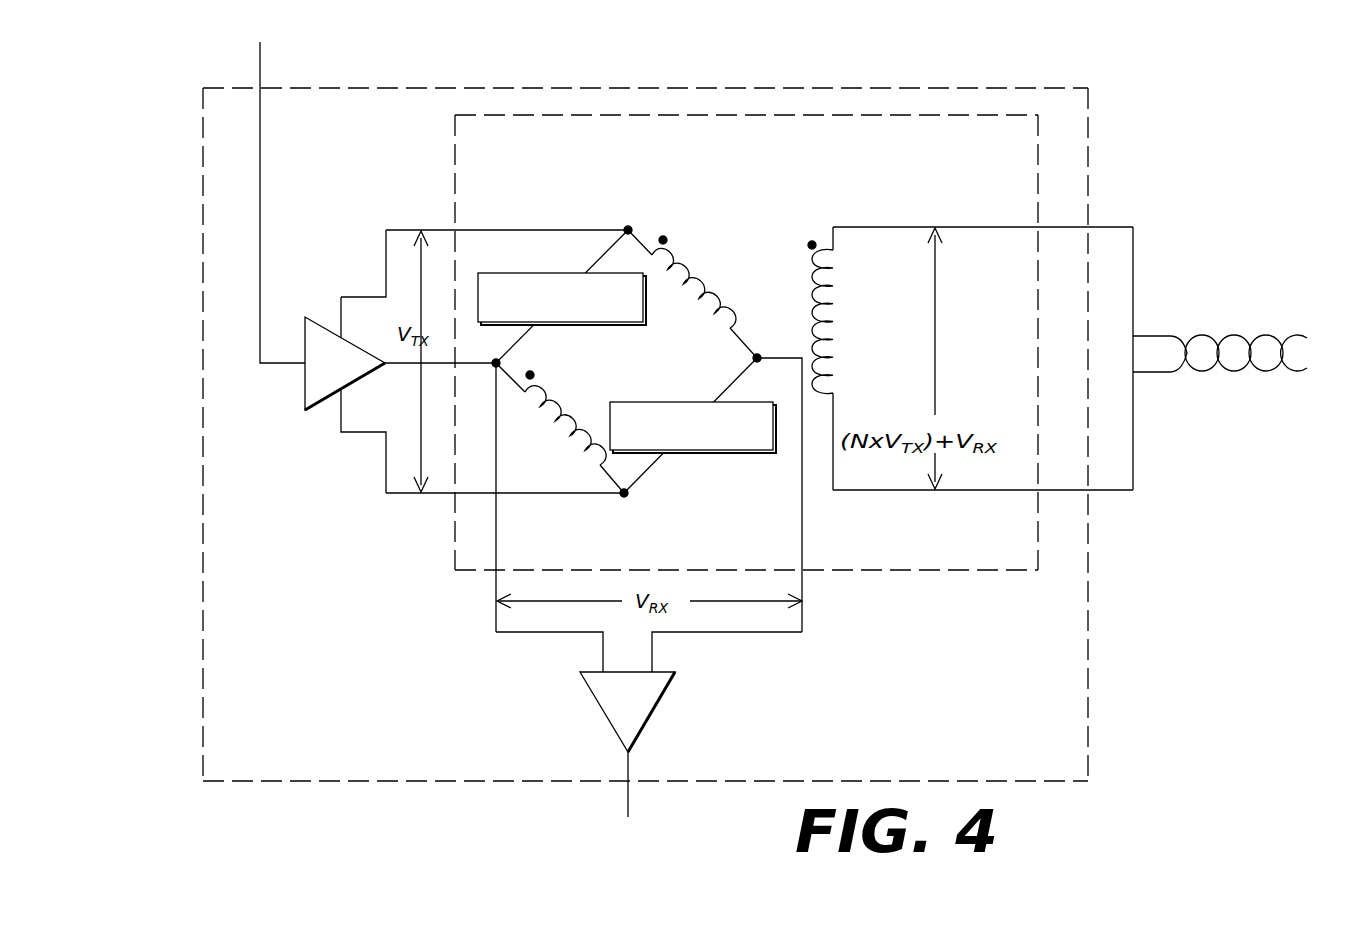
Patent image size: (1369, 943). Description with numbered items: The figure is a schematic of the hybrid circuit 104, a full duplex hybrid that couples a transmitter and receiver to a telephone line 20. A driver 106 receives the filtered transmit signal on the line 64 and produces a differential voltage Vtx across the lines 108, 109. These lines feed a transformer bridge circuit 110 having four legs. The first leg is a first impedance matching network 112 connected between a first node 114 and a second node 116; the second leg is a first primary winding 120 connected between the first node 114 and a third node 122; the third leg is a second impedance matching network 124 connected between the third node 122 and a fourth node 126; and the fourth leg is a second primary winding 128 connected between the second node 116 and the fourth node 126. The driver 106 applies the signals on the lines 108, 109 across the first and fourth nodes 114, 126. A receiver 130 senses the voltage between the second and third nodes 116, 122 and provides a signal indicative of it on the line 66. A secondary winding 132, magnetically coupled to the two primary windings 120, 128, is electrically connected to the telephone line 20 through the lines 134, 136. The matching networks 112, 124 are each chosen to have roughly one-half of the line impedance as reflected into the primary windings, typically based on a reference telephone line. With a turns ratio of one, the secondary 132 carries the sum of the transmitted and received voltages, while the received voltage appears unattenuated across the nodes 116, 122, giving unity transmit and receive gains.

The telephone line 20 is at (1232, 369).
The line 64 is at (259, 58).
The line 66 is at (627, 800).
The hybrid circuit 104 is at (965, 85).
The driver 106 is at (310, 393).
The line 108 is at (400, 230).
The line 109 is at (403, 494).
The transformer bridge circuit 110 is at (815, 112).
The first impedance matching network 112 is at (553, 273).
The first node 114 is at (628, 228).
The second node 116 is at (498, 362).
The first primary winding 120 is at (686, 258).
The third node 122 is at (755, 358).
The second impedance matching network 124 is at (708, 450).
The fourth node 126 is at (626, 495).
The second primary winding 128 is at (557, 400).
The receiver 130 is at (713, 712).
The secondary winding 132 is at (813, 307).
The line 134 is at (882, 227).
The line 136 is at (905, 490).